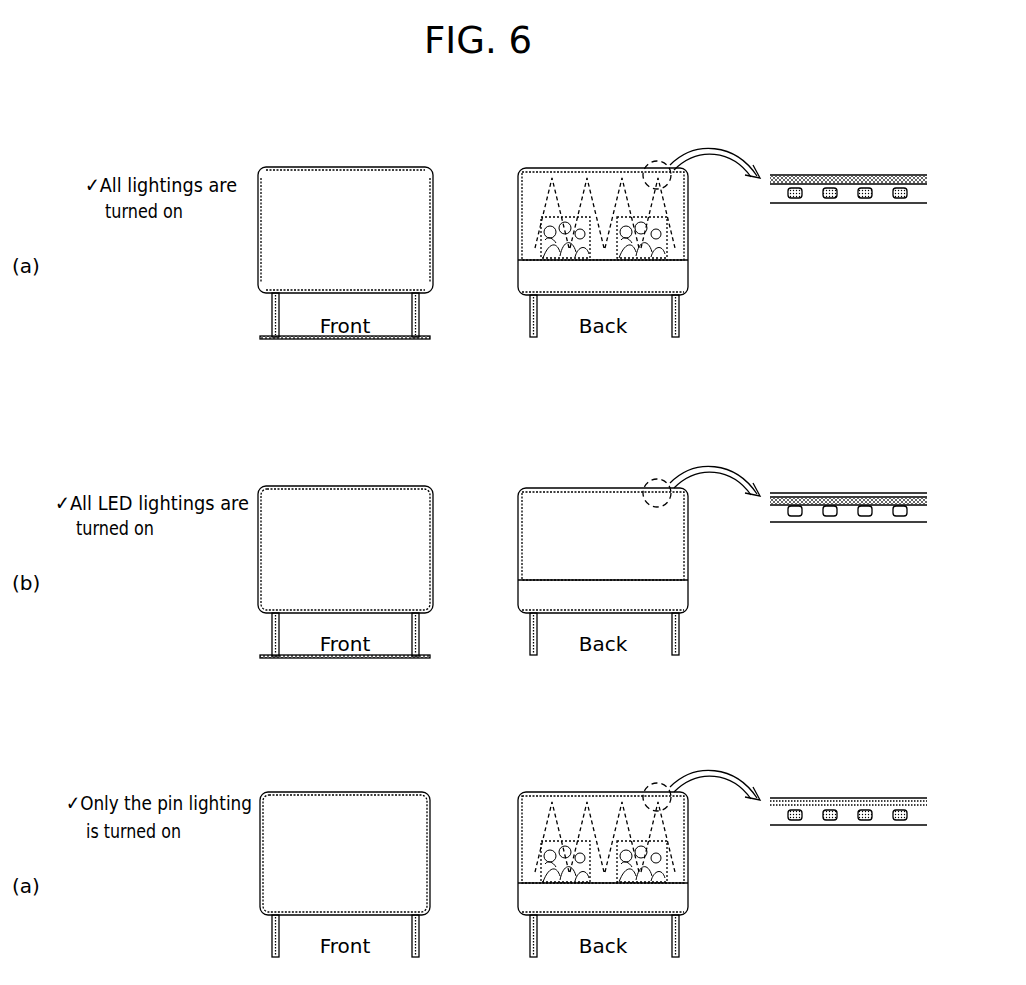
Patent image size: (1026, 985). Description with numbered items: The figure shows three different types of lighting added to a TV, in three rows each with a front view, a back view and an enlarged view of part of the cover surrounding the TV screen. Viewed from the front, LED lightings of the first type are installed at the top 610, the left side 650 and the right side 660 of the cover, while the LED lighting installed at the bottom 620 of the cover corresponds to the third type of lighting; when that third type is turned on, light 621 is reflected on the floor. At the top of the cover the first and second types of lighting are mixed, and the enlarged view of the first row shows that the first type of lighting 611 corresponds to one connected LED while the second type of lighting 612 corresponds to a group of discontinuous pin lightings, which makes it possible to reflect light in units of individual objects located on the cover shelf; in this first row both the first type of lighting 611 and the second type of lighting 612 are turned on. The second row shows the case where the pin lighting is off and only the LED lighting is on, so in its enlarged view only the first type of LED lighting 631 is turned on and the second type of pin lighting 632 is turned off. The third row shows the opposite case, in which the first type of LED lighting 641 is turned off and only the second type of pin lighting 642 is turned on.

The top of the cover 610 is at (345, 166).
The left side of the cover 650 is at (258, 227).
The right side of the cover 660 is at (433, 228).
The bottom of the cover 620 is at (408, 294).
The light reflected on the floor 621 is at (290, 336).
The first type of lighting 611 is at (832, 177).
The second type of lighting 612 is at (795, 198).
The first type of LED lighting 631 is at (832, 496).
The second type of pin lighting 632 is at (795, 516).
The first type of LED lighting 641 is at (832, 800).
The second type of pin lighting 642 is at (795, 820).